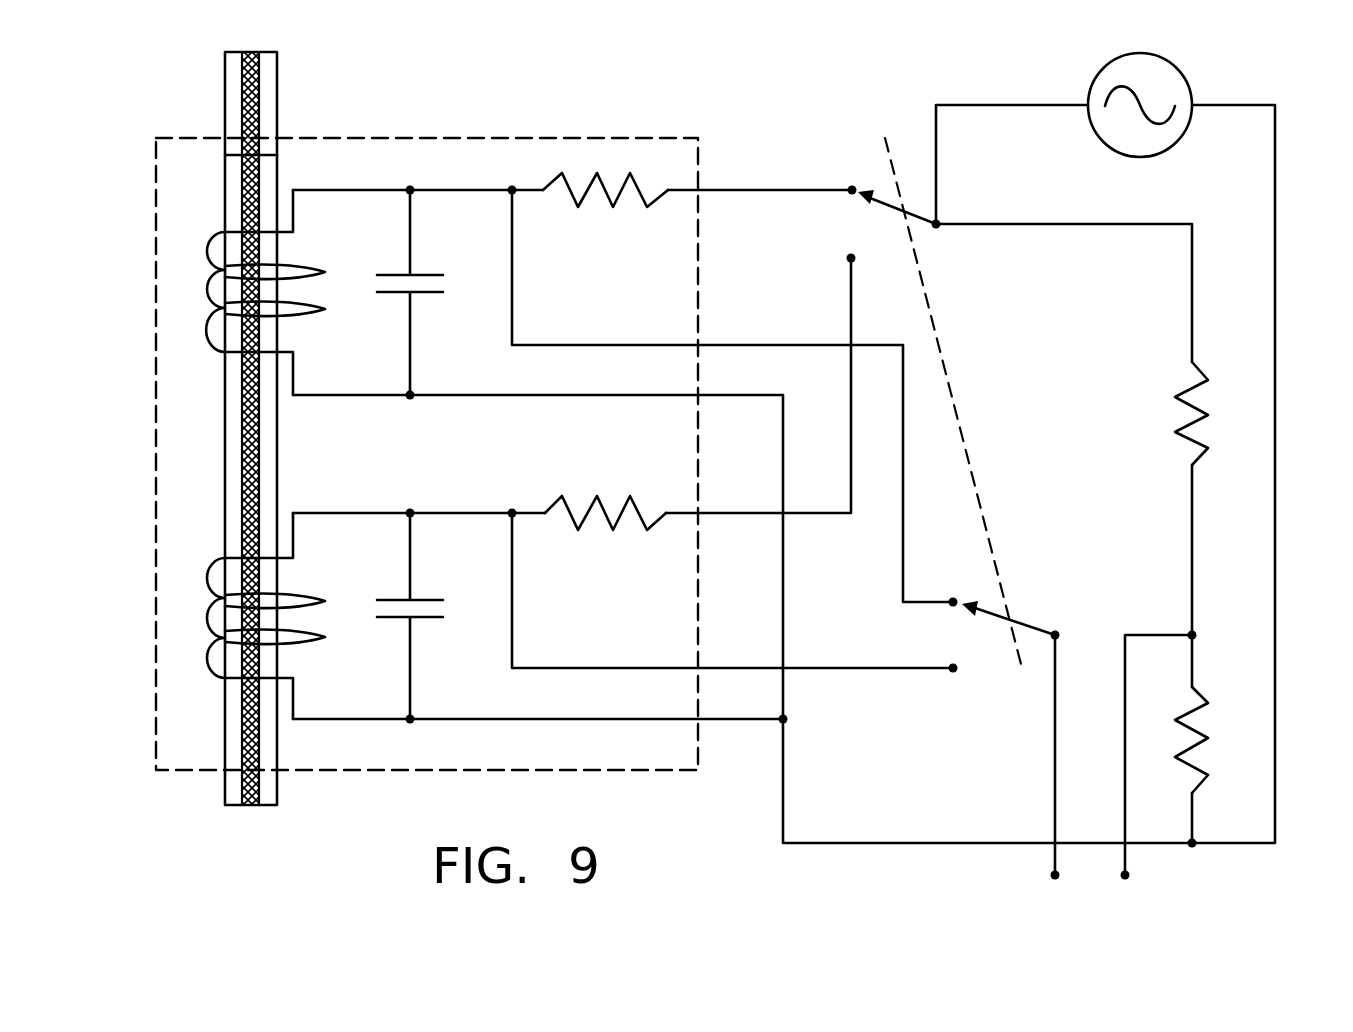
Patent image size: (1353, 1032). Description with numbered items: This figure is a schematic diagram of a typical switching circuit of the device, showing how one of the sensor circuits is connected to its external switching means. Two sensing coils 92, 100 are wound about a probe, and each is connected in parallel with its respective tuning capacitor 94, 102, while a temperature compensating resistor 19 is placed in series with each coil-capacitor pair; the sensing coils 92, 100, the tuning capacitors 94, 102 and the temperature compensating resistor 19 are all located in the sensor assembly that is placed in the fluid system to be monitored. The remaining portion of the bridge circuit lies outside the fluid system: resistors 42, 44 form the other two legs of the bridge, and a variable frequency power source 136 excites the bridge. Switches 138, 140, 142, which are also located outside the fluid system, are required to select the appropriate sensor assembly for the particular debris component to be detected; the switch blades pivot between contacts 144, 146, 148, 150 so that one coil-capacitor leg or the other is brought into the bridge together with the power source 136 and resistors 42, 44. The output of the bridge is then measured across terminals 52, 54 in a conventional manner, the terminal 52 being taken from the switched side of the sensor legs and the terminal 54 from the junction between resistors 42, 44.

The temperature compensating resistor 19 is at (600, 197).
The resistor 42 is at (1200, 372).
The resistor 44 is at (1205, 732).
The output terminal 52 is at (1055, 880).
The output terminal 54 is at (1125, 880).
The sensing coil 92 is at (205, 297).
The tuning capacitor 94 is at (392, 293).
The sensing coil 100 is at (203, 580).
The tuning capacitor 102 is at (390, 620).
The variable frequency power source 136 is at (1182, 73).
The switch 138 is at (920, 220).
The switch 140 is at (1033, 627).
The switch 142 is at (482, 135).
The switch contact 144 is at (852, 186).
The contact 146 is at (850, 257).
The contact 148 is at (955, 598).
The contact 150 is at (955, 677).